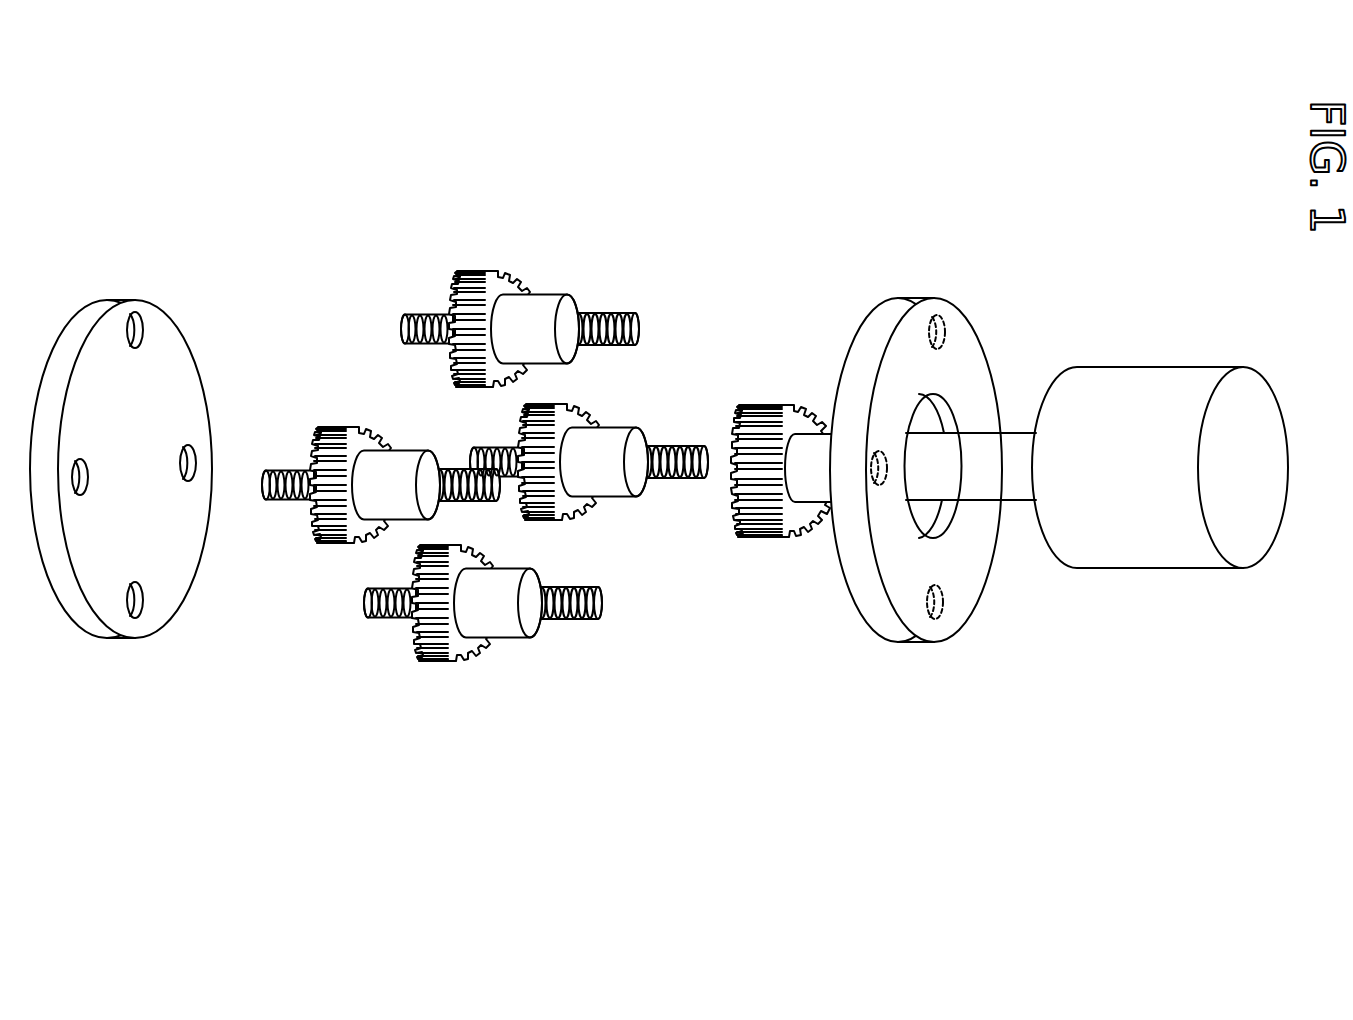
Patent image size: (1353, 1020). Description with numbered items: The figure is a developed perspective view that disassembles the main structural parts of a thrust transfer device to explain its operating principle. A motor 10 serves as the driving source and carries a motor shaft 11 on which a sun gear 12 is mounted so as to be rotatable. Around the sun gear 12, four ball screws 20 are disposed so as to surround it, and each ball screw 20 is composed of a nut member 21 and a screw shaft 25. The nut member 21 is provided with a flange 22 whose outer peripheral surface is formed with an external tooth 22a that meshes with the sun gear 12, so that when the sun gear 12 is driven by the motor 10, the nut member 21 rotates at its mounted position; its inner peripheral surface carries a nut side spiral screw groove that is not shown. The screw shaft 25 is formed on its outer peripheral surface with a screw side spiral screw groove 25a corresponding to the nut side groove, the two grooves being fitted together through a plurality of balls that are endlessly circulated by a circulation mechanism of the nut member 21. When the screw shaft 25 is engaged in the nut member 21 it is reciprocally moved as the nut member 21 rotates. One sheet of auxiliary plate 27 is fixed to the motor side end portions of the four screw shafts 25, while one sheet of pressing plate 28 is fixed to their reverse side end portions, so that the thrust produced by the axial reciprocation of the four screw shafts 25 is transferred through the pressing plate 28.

The motor 10 is at (1167, 385).
The motor shaft 11 is at (987, 462).
The sun gear 12 is at (775, 523).
The ball screw 20 is at (512, 455).
The nut member 21 is at (557, 295).
The flange 22 is at (477, 471).
The external tooth 22a is at (478, 272).
The screw shaft 25 is at (490, 476).
The screw side spiral screw groove 25a is at (590, 313).
The auxiliary plate 27 is at (898, 302).
The pressing plate 28 is at (108, 300).